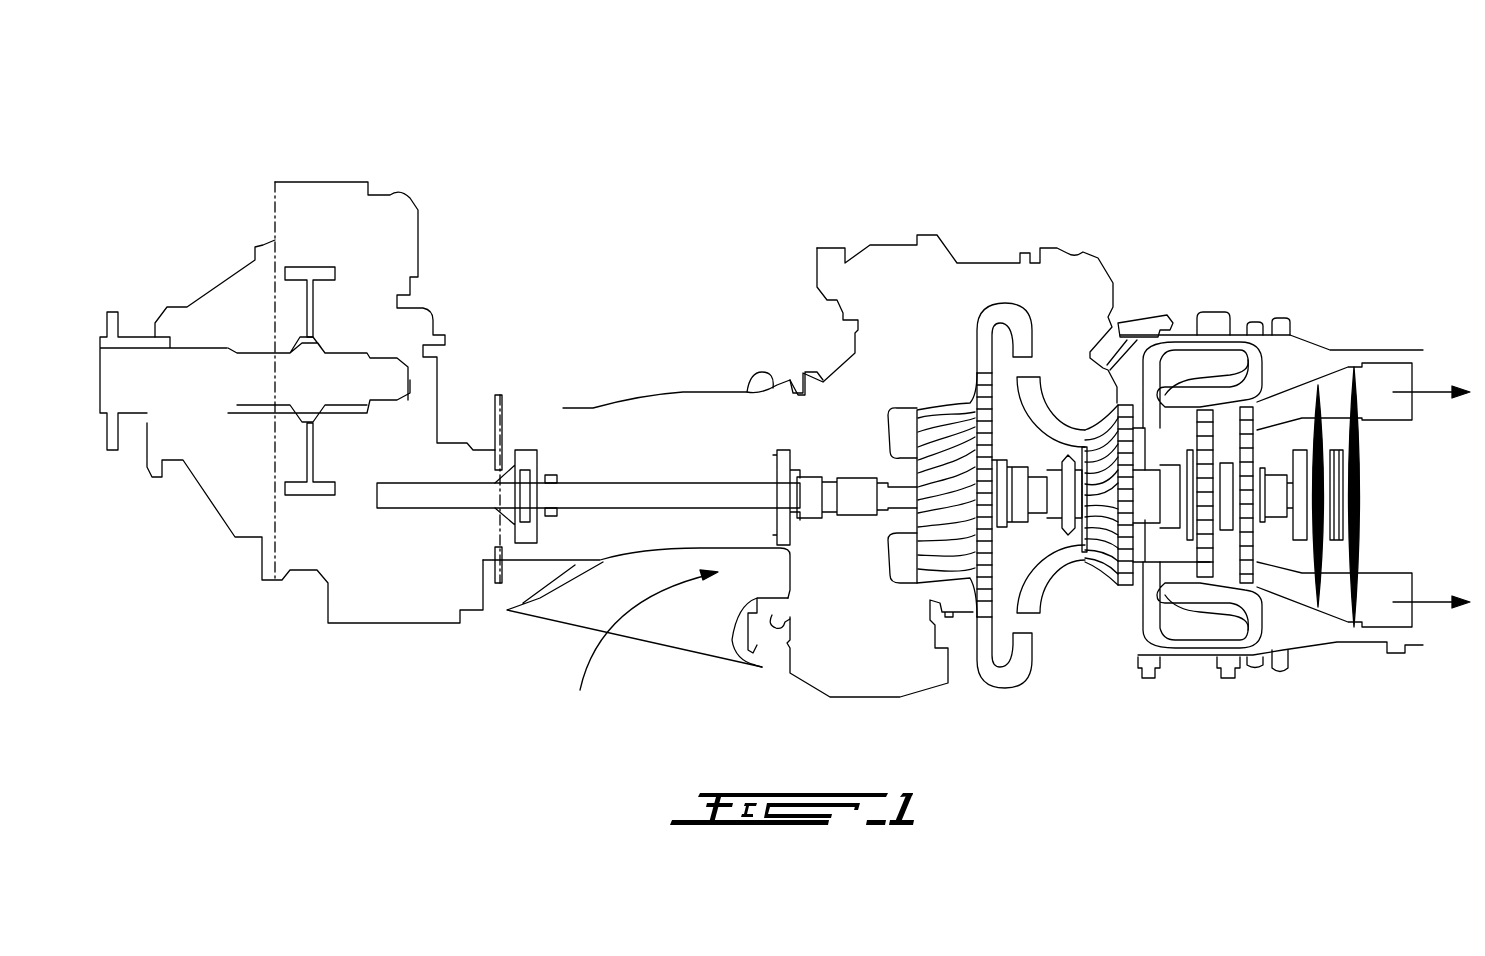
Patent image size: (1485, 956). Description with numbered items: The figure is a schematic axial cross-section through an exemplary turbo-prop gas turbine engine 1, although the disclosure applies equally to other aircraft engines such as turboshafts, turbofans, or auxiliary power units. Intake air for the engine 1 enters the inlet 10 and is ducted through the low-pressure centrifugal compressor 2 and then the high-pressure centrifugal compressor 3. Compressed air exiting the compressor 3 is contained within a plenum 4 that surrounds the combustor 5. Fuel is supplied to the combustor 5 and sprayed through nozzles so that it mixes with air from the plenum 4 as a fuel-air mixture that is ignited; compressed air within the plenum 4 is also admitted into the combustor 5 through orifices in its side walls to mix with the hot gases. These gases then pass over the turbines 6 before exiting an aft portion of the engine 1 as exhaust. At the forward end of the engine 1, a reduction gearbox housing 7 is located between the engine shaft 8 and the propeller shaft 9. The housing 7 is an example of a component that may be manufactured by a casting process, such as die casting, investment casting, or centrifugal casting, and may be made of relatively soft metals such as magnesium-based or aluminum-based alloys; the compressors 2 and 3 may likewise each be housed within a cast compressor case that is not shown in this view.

The turbo-prop gas turbine engine 1 is at (227, 177).
The low-pressure centrifugal compressor 2 is at (935, 409).
The high-pressure centrifugal compressor 3 is at (1100, 417).
The plenum 4 is at (1140, 360).
The combustor 5 is at (1225, 367).
The turbines 6 is at (1367, 463).
The reduction gearbox housing 7 is at (420, 238).
The engine shaft 8 is at (600, 478).
The propeller shaft 9 is at (138, 335).
The inlet 10 is at (685, 617).